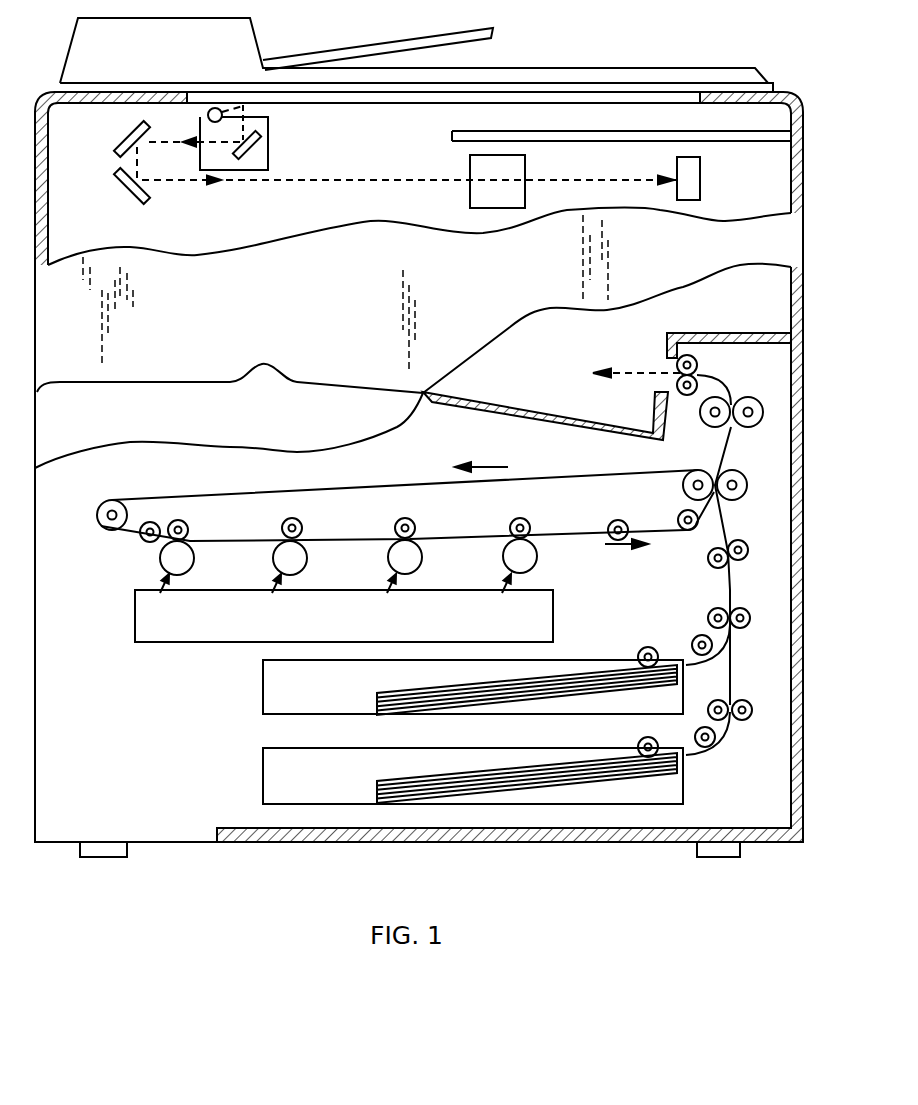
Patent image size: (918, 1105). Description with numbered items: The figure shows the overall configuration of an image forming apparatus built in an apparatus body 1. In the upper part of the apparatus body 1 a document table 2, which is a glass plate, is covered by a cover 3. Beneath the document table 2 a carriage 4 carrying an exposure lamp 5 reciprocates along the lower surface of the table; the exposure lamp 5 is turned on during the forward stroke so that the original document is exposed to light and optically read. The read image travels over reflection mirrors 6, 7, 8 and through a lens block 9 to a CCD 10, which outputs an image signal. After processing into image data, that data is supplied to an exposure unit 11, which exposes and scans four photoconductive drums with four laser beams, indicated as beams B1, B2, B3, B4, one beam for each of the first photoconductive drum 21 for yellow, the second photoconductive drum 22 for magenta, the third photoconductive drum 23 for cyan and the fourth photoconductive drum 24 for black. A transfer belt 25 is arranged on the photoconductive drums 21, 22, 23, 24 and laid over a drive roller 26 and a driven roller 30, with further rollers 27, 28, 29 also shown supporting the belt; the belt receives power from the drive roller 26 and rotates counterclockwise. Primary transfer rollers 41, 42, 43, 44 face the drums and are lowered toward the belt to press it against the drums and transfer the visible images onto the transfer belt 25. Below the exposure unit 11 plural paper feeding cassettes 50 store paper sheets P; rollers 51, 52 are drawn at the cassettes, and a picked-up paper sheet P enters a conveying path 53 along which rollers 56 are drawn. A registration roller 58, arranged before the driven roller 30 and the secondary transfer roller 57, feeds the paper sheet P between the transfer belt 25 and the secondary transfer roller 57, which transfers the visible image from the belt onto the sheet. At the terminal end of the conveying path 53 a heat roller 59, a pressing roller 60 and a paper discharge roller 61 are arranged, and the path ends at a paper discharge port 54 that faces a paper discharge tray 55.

The apparatus body 1 is at (803, 175).
The document table 2 is at (425, 104).
The cover 3 is at (592, 68).
The carriage 4 is at (268, 117).
The exposure lamp 5 is at (208, 117).
The reflection mirror 6 is at (259, 148).
The reflection mirror 7 is at (121, 141).
The reflection mirror 8 is at (120, 192).
The lens block 9 is at (527, 160).
The CCD 10 is at (702, 168).
The exposure unit 11 is at (135, 620).
The first photoconductive drum 21 is at (195, 557).
The second photoconductive drum 22 is at (308, 557).
The third photoconductive drum 23 is at (423, 557).
The fourth photoconductive drum 24 is at (538, 556).
The transfer belt 25 is at (413, 483).
The drive roller 26 is at (107, 500).
The tension roller 27 is at (152, 522).
The belt support roller 28 is at (613, 522).
The belt support roller 29 is at (683, 516).
The driven roller 30 is at (698, 470).
The primary transfer roller 41 is at (182, 520).
The primary transfer roller 42 is at (283, 525).
The primary transfer roller 43 is at (396, 525).
The primary transfer roller 44 is at (511, 522).
The paper feeding cassette 50 is at (263, 688).
The pickup roller 51 is at (639, 651).
The feed roller 52 is at (693, 644).
The conveying path 53 is at (730, 522).
The paper discharge port 54 is at (666, 362).
The paper discharge tray 55 is at (333, 381).
The conveying rollers 56 is at (710, 614).
The secondary transfer roller 57 is at (738, 473).
The registration roller 58 is at (708, 557).
The heat roller 59 is at (657, 399).
The pressing roller 60 is at (752, 401).
The paper discharge roller 61 is at (700, 362).
The laser beam B1 is at (158, 588).
The laser beam B2 is at (270, 588).
The laser beam B3 is at (385, 588).
The laser beam B4 is at (500, 588).
The paper sheet P is at (417, 688).